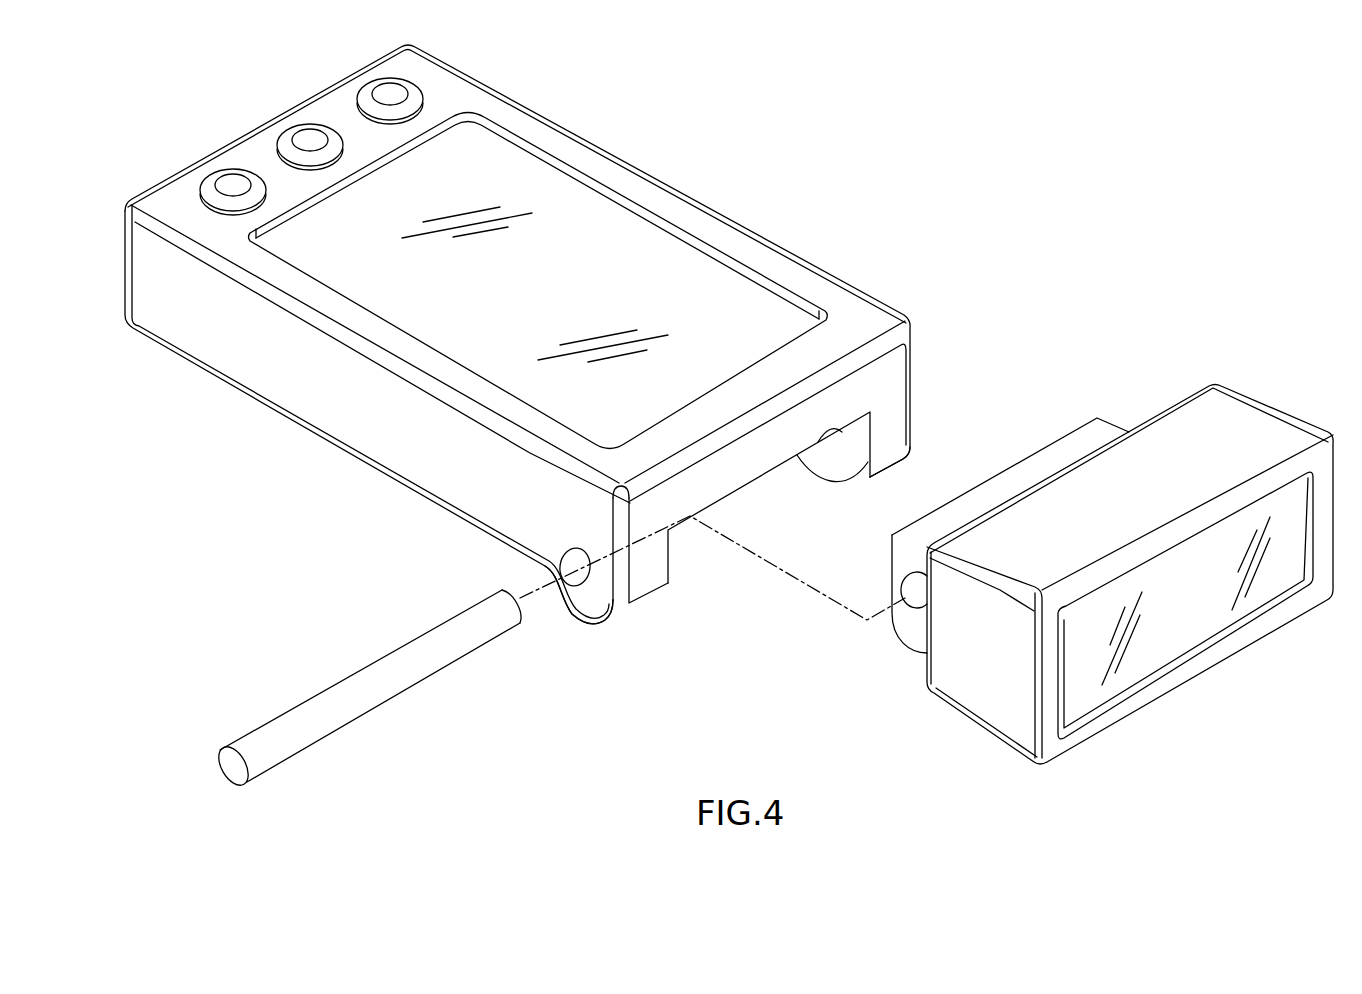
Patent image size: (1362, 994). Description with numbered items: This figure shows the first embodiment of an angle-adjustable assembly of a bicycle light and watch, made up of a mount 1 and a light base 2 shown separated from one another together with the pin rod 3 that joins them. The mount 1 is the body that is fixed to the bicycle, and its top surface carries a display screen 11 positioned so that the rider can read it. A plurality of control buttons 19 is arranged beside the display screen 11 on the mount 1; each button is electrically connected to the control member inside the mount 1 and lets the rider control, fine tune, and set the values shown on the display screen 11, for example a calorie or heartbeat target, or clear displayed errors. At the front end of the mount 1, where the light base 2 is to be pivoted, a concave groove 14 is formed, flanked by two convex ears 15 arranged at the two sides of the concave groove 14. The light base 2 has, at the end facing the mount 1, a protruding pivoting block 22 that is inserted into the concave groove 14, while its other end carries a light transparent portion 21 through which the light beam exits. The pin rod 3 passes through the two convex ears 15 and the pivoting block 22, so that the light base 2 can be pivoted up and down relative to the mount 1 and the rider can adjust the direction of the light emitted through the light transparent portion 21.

The mount 1 is at (568, 381).
The display screen 11 is at (694, 272).
The control buttons 19 is at (307, 137).
The concave groove 14 is at (688, 538).
The convex ears 15 is at (892, 432).
The pin rod 3 is at (373, 678).
The light base 2 is at (1076, 581).
The light transparent portion 21 is at (1213, 627).
The pivoting block 22 is at (912, 632).